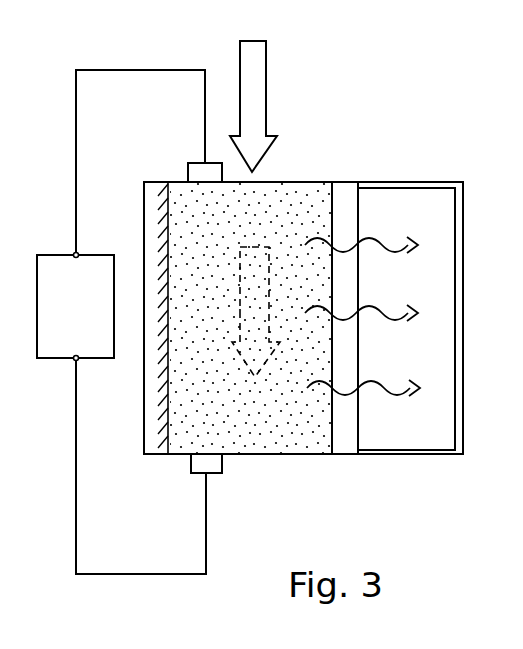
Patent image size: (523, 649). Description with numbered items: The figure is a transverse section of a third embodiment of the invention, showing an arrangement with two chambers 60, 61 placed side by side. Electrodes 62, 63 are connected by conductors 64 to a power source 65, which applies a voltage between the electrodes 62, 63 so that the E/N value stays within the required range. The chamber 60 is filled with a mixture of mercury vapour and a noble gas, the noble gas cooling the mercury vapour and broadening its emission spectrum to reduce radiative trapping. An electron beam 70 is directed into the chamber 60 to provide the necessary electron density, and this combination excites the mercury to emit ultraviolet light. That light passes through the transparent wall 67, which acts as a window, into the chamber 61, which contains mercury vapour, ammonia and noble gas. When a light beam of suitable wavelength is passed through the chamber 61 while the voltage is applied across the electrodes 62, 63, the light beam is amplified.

The chamber 60 is at (218, 283).
The chamber 61 is at (422, 291).
The electrode 62 is at (297, 441).
The electrode 63 is at (302, 182).
The conductors 64 is at (171, 59).
The power source 65 is at (75, 307).
The transparent wall 67 is at (342, 428).
The electron beam 70 is at (272, 72).